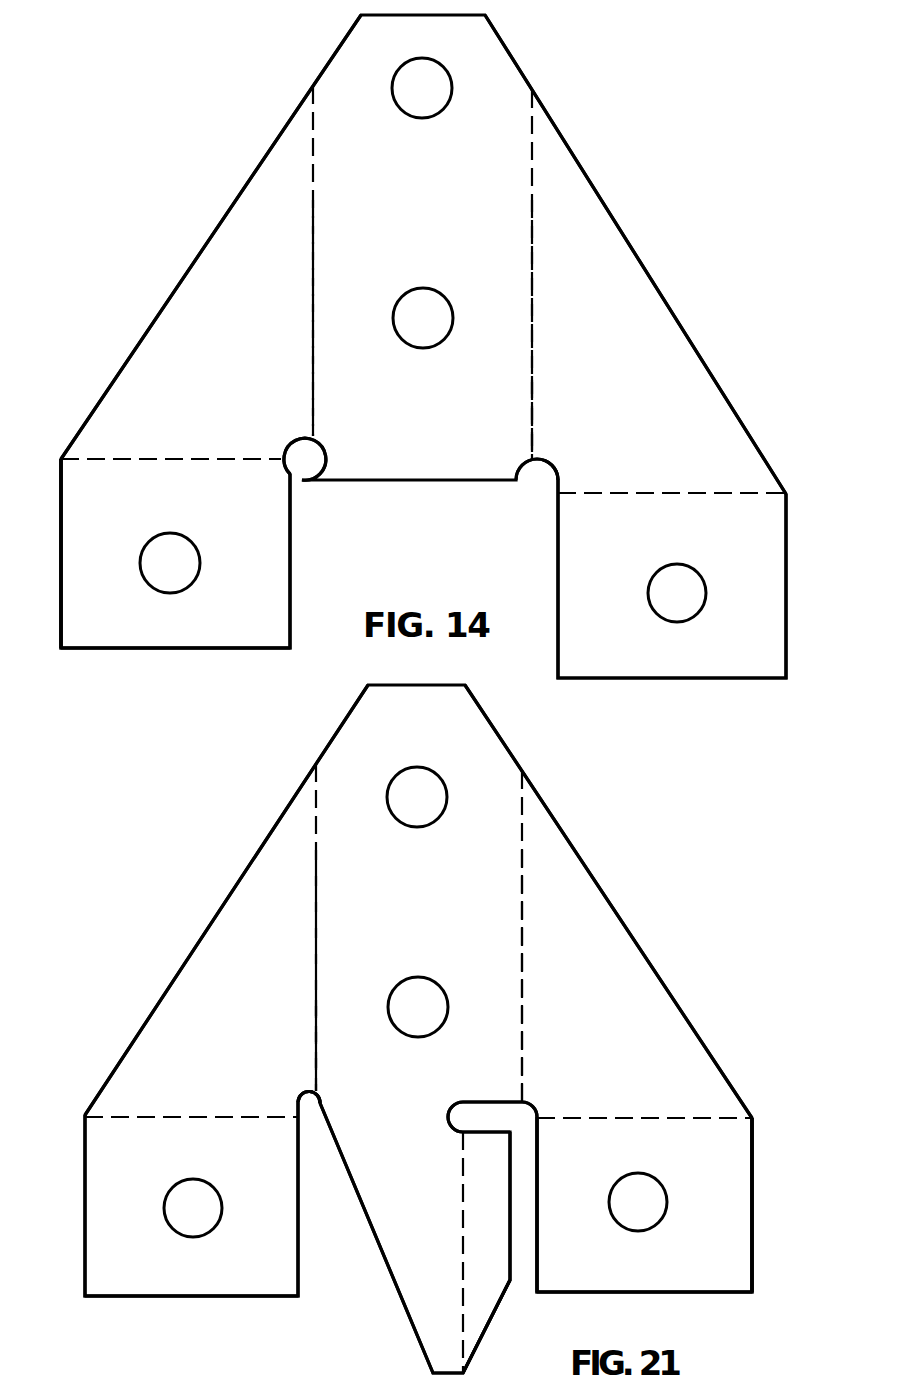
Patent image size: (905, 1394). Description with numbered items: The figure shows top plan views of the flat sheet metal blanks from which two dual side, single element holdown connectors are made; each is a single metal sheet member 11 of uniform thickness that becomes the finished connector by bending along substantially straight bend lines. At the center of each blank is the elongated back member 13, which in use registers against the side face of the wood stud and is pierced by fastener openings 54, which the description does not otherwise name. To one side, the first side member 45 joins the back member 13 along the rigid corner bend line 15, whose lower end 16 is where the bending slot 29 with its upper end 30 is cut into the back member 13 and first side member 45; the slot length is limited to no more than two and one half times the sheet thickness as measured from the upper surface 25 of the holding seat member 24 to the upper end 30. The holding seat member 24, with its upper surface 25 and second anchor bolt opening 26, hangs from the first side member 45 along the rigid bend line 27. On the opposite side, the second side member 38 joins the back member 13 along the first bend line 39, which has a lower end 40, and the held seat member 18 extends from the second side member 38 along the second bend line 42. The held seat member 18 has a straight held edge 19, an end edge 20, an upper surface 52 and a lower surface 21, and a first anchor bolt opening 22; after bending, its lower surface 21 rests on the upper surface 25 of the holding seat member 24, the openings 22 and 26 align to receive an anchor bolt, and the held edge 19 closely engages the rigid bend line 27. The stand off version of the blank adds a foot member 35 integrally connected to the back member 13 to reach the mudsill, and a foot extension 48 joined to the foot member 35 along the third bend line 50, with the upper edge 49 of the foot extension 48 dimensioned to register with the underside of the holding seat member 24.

In FIG. 14, the single metal sheet member 11 is at (604, 200).
In FIG. 21, the single metal sheet member 11 is at (606, 897).
In FIG. 14, the elongated back member 13 is at (443, 211).
In FIG. 21, the elongated back member 13 is at (436, 889).
In FIG. 14, the rigid corner bend line 15 is at (533, 356).
In FIG. 21, the rigid corner bend line 15 is at (318, 918).
In FIG. 14, the lower end of rigid corner bend line 16 is at (532, 426).
In FIG. 21, the lower end of rigid corner bend line 16 is at (318, 1081).
In FIG. 14, the held seat member 18 is at (60, 578).
In FIG. 21, the held seat member 18 is at (755, 1251).
In FIG. 14, the held edge 19 is at (180, 650).
In FIG. 21, the held edge 19 is at (562, 1293).
In FIG. 14, the end edge 20 is at (60, 478).
In FIG. 21, the end edge 20 is at (535, 1240).
In FIG. 14, the lower surface of held seat member 21 is at (248, 621).
In FIG. 14, the first anchor bolt opening 22 is at (190, 542).
In FIG. 21, the first anchor bolt opening 22 is at (666, 1192).
In FIG. 14, the holding seat member 24 is at (652, 684).
In FIG. 21, the holding seat member 24 is at (177, 1297).
In FIG. 21, the upper surface of holding seat member 25 is at (141, 1276).
In FIG. 14, the second anchor bolt opening 26 is at (697, 571).
In FIG. 21, the second anchor bolt opening 26 is at (212, 1189).
In FIG. 14, the rigid bend line 27 is at (652, 492).
In FIG. 21, the rigid bend line 27 is at (150, 1117).
In FIG. 14, the bending slot 29 is at (560, 473).
In FIG. 21, the bending slot 29 is at (296, 1103).
In FIG. 14, the upper end of bending slot 30 is at (553, 463).
In FIG. 21, the upper end of bending slot 30 is at (307, 1093).
In FIG. 21, the foot member 35 is at (378, 1250).
In FIG. 14, the second side member 38 is at (243, 351).
In FIG. 21, the second side member 38 is at (636, 1046).
In FIG. 14, the first bend line 39 is at (318, 305).
In FIG. 21, the first bend line 39 is at (527, 990).
In FIG. 14, the lower end of first bend line 40 is at (315, 425).
In FIG. 14, the second bend line 42 is at (132, 459).
In FIG. 21, the second bend line 42 is at (604, 1117).
In FIG. 14, the first side member 45 is at (635, 368).
In FIG. 21, the first side member 45 is at (246, 1013).
In FIG. 21, the foot extension 48 is at (490, 1322).
In FIG. 21, the upper edge of foot extension 49 is at (458, 1128).
In FIG. 21, the third bend line 50 is at (462, 1205).
In FIG. 21, the upper surface of held seat member 52 is at (691, 1276).
In FIG. 14, the hole 54 is at (446, 80).
In FIG. 21, the hole 54 is at (408, 771).